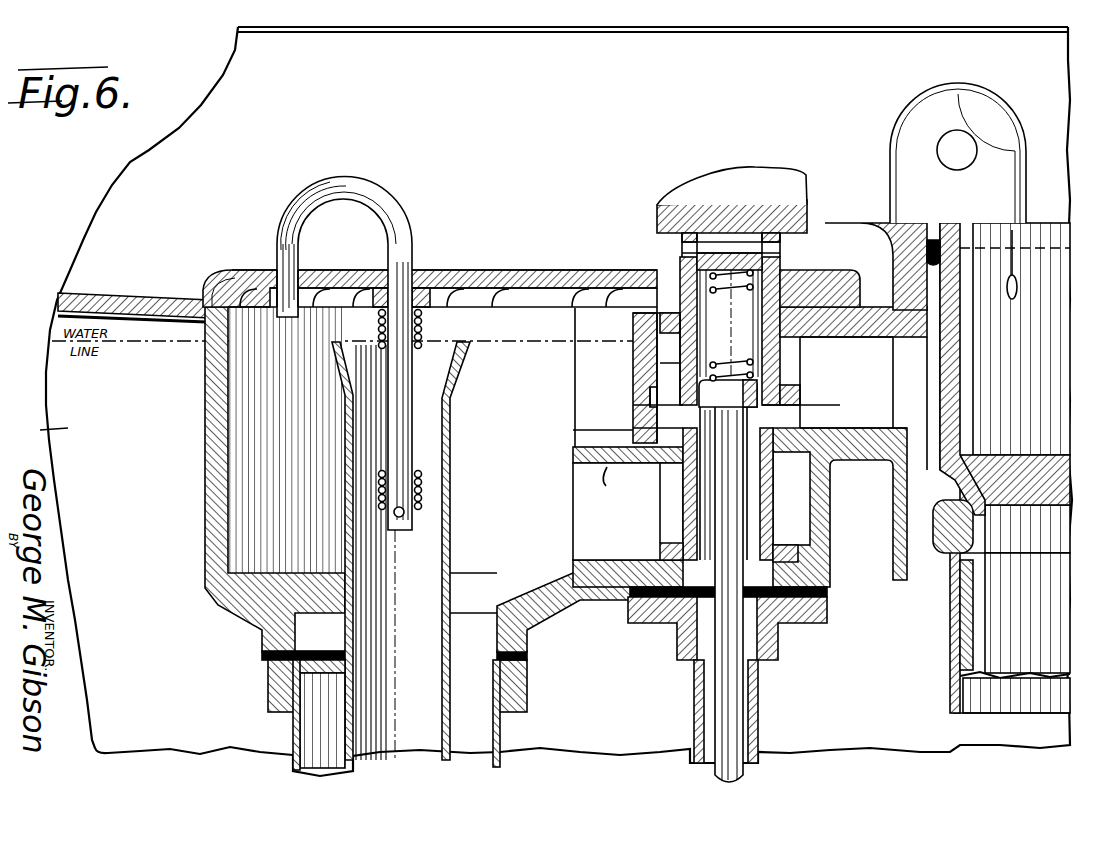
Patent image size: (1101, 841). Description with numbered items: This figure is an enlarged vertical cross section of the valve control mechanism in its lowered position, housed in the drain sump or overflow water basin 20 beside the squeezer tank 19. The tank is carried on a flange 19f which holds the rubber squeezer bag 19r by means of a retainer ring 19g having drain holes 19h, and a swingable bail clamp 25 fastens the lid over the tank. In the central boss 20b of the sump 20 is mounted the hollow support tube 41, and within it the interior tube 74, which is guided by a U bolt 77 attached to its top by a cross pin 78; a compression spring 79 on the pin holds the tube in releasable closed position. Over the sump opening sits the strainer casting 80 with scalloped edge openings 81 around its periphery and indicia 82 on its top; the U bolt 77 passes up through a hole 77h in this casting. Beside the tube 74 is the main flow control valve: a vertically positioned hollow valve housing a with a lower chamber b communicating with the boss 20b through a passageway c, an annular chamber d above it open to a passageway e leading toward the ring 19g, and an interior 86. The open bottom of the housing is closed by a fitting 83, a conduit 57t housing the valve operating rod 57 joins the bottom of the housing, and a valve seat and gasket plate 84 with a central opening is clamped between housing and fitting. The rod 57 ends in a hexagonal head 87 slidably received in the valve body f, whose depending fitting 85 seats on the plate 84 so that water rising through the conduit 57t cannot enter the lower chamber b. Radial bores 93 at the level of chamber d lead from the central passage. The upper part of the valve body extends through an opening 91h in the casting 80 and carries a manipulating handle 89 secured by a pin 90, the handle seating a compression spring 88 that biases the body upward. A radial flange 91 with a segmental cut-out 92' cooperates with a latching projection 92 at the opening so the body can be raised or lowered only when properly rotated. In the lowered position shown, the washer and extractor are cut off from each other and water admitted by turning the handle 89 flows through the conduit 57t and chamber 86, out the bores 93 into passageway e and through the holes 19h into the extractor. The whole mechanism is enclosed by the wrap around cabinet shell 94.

The drain sump or overflow water basin 20 is at (100, 292).
The central boss 20b is at (273, 641).
The wrap around cabinet shell 94 is at (43, 430).
The strainer casting 80 is at (216, 268).
The indicia 82 is at (490, 268).
The scalloped edge openings 81 is at (627, 302).
The U bolt 77 is at (413, 232).
The hole 77h is at (302, 268).
The compression spring 79 is at (423, 336).
The cross pin 78 is at (405, 512).
The interior tube 74 is at (452, 557).
The hollow support tube 41 is at (501, 735).
The manipulating handle 89 is at (745, 172).
The pin 90 is at (781, 250).
The radial flange 91 is at (853, 338).
The opening 91h is at (669, 300).
The segmental cut-out portion 92' is at (649, 339).
The latching projection 92 is at (829, 273).
The compression spring 88 is at (730, 348).
The hexagonal head 87 is at (757, 395).
The radial bores 93 is at (633, 429).
The valve housing a is at (633, 381).
The lower chamber b is at (803, 478).
The passageway c is at (628, 511).
The annular chamber d is at (660, 416).
The passageway e is at (863, 437).
The valve body f is at (800, 403).
The depending fitting 85 is at (775, 498).
The interior of the housing 86 is at (752, 520).
The valve operating rod 57 is at (720, 687).
The conduit 57t is at (762, 726).
The fitting 83 is at (822, 626).
The valve seat and gasket plate 84 is at (833, 592).
The squeezer tank 19 is at (953, 693).
The retainer ring 19g is at (957, 430).
The flange 19f is at (933, 531).
The rubber squeezer bag 19r is at (974, 633).
The drain holes 19h is at (965, 280).
The swingable bail clamp 25 is at (916, 108).